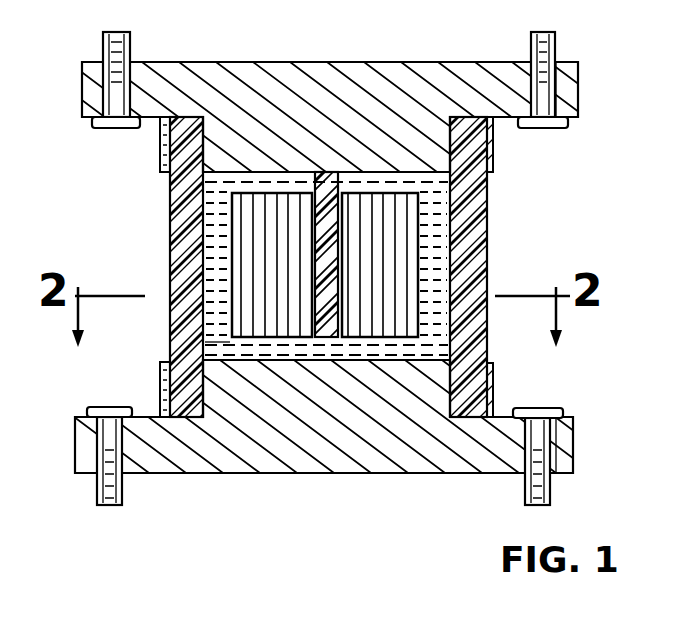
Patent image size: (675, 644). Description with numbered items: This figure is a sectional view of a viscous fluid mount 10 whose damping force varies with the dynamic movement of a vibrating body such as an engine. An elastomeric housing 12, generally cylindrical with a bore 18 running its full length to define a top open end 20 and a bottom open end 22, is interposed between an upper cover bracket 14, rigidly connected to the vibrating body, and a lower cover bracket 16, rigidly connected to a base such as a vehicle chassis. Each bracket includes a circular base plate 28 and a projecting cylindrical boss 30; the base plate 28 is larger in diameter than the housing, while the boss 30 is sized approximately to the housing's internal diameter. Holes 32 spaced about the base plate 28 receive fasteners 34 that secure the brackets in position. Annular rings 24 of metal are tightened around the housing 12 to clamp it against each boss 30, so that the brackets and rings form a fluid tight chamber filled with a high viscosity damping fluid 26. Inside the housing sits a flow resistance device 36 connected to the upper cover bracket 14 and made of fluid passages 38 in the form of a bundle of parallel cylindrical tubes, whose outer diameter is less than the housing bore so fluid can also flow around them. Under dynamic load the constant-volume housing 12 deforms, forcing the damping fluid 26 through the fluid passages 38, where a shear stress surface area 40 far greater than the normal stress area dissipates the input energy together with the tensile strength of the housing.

The viscous fluid mount 10 is at (580, 160).
The elastomeric housing 12 is at (482, 196).
The upper cover bracket 14 is at (343, 65).
The lower cover bracket 16 is at (232, 460).
The bore 18 is at (321, 265).
The top open end 20 is at (280, 172).
The bottom open end 22 is at (372, 365).
The annular rings 24 is at (496, 162).
The high viscosity damping fluid 26 is at (207, 344).
The circular base plate 28 is at (570, 63).
The boss 30 is at (217, 132).
The holes 32 is at (97, 450).
The fasteners 34 is at (115, 31).
The flow resistance device 36 is at (440, 272).
The fluid passages 38 is at (422, 322).
The shear stress surface area 40 is at (232, 232).